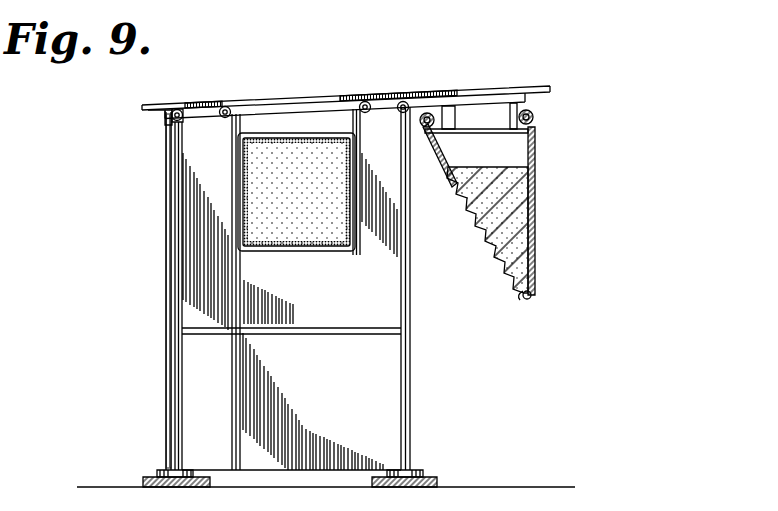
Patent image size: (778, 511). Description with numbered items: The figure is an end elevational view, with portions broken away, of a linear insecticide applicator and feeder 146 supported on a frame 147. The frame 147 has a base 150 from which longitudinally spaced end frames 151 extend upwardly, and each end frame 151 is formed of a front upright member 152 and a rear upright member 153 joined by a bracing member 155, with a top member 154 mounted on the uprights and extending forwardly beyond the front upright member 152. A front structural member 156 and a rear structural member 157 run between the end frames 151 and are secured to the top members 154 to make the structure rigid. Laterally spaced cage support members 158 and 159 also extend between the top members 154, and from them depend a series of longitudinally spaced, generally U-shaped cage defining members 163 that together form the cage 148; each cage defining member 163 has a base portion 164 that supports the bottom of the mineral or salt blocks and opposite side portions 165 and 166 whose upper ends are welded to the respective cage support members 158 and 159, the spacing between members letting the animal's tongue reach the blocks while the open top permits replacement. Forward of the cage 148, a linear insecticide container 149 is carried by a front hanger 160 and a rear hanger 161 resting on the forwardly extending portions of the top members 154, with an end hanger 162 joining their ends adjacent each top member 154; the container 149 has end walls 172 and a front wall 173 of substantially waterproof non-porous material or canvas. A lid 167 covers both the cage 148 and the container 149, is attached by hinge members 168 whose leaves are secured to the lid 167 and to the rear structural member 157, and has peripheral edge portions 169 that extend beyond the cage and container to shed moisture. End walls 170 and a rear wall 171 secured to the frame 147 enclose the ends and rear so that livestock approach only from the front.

The insecticide applicator and feeder 146 is at (562, 77).
The frame 147 is at (163, 405).
The cage 148 is at (233, 258).
The insecticide container 149 is at (528, 304).
The base 150 is at (432, 476).
The end frame 151 is at (170, 157).
The front upright member 152 is at (412, 285).
The rear upright member 153 is at (184, 418).
The top member 154 is at (289, 96).
The bracing member 155 is at (212, 335).
The front structural member 156 is at (404, 100).
The rear structural member 157 is at (178, 109).
The cage support member 158 is at (227, 106).
The cage support member 159 is at (364, 101).
The front hanger 160 is at (512, 113).
The rear hanger 161 is at (440, 117).
The end hanger 162 is at (497, 126).
The cage defining member 163 is at (358, 254).
The base portion 164 is at (316, 256).
The side portion 165 is at (362, 242).
The side portion 166 is at (230, 168).
The lid 167 is at (245, 101).
The hinge member 168 is at (152, 118).
The peripheral edge portion 169 is at (552, 88).
The end wall 170 is at (212, 200).
The rear wall 171 is at (166, 346).
The end wall 172 is at (513, 160).
The front wall 173 is at (535, 232).